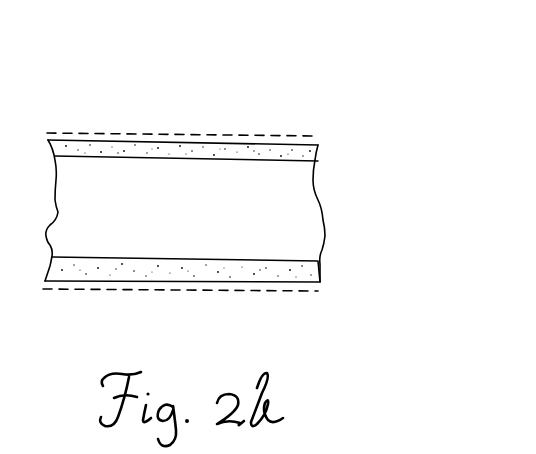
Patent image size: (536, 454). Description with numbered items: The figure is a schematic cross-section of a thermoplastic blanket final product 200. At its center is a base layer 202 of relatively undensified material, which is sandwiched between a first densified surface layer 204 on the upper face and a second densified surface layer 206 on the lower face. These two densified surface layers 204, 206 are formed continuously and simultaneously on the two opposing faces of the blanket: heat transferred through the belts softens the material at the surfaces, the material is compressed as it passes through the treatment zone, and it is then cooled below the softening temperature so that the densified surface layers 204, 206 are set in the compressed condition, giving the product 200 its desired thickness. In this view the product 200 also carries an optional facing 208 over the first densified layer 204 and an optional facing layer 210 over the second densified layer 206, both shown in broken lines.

The thermoplastic blanket final product 200 is at (229, 98).
The base layer 202 is at (303, 202).
The first densified surface layer 204 is at (305, 155).
The second densified surface layer 206 is at (308, 277).
The facing 208 is at (135, 132).
The facing layer 210 is at (120, 285).